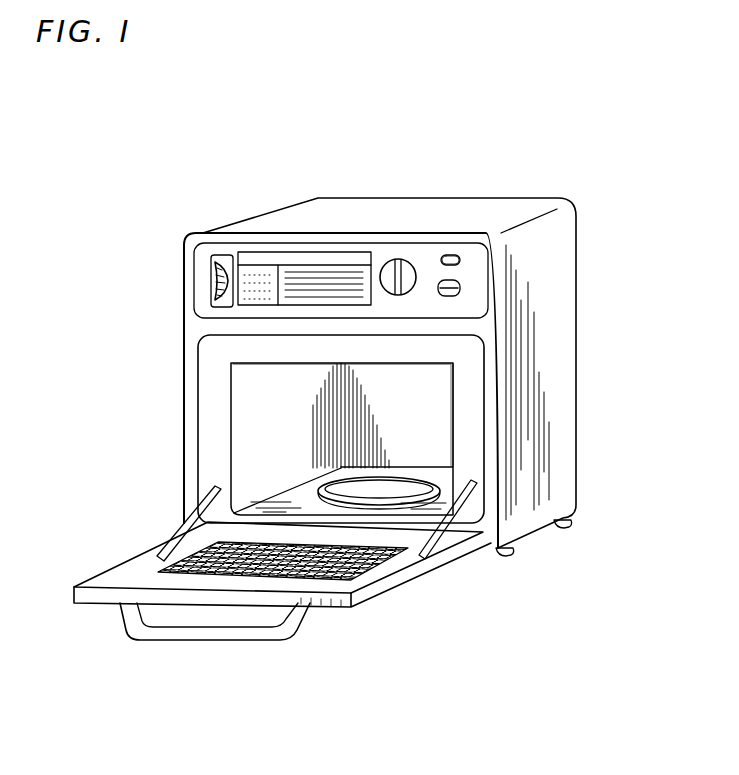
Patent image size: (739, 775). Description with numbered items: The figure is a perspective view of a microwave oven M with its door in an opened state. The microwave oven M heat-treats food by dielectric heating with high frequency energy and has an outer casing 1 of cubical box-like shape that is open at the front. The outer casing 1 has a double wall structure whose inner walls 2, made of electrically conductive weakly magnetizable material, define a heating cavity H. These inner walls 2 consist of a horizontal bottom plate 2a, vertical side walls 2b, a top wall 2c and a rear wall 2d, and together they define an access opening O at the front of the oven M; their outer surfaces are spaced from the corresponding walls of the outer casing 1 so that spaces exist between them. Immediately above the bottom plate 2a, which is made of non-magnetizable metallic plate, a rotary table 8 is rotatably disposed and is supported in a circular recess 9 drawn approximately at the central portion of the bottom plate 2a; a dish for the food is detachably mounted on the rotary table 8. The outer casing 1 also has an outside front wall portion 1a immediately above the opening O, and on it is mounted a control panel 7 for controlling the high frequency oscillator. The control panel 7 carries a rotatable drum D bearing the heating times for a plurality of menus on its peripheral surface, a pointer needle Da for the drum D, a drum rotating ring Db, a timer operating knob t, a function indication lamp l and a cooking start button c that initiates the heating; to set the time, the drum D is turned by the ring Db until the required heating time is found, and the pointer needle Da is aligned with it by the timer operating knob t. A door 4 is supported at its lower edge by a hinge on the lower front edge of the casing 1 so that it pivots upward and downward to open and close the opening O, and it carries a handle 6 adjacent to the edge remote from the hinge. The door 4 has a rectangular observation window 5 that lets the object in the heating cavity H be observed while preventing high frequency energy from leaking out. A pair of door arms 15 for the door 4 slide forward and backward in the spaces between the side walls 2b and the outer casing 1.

The microwave oven M is at (608, 146).
The outer casing 1 is at (560, 405).
The outside front wall portion 1a is at (386, 256).
The timer operating knob t is at (400, 268).
The rotatable drum D is at (322, 276).
The pointer needle Da is at (272, 258).
The drum rotating ring Db is at (214, 283).
The control panel 7 is at (440, 250).
The function indication lamp l is at (457, 254).
The cooking start button c is at (457, 288).
The inner walls 2 is at (243, 400).
The horizontal bottom plate 2a is at (298, 478).
The vertical side walls 2b is at (243, 380).
The top wall 2c is at (313, 367).
The rear wall 2d is at (413, 390).
The heating cavity H is at (267, 428).
The access opening O is at (413, 445).
The rotary table 8 is at (438, 495).
The circular recess 9 is at (482, 532).
The door arms 15 is at (453, 533).
The door 4 is at (368, 598).
The observation window 5 is at (372, 562).
The handle 6 is at (216, 642).